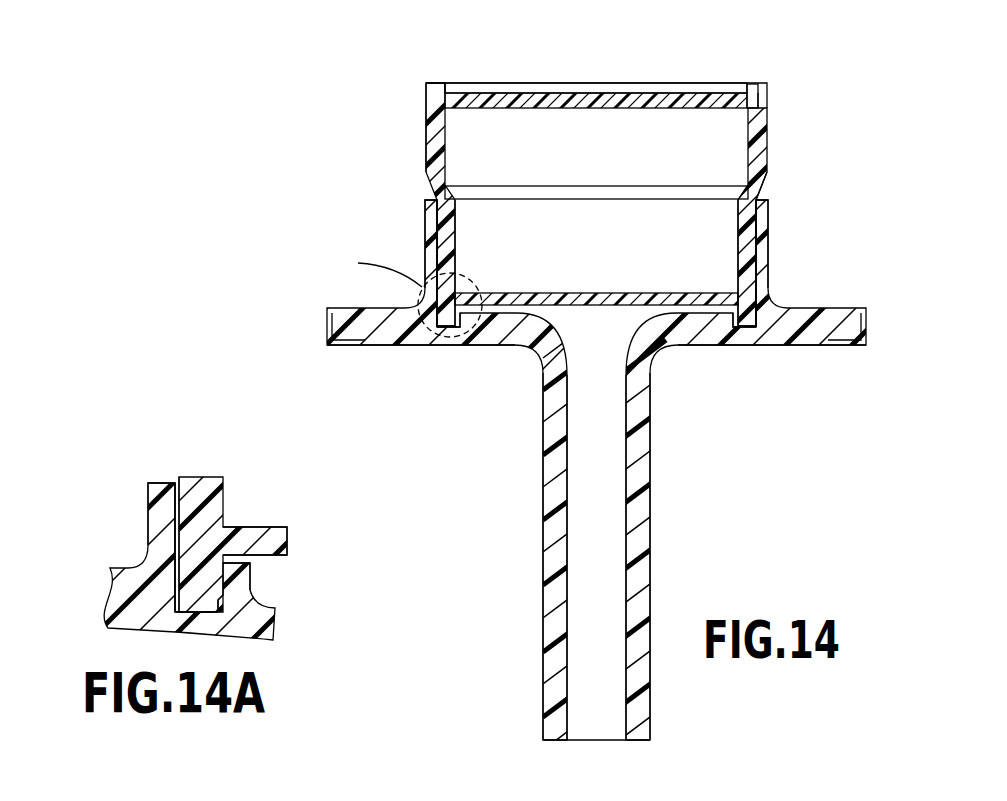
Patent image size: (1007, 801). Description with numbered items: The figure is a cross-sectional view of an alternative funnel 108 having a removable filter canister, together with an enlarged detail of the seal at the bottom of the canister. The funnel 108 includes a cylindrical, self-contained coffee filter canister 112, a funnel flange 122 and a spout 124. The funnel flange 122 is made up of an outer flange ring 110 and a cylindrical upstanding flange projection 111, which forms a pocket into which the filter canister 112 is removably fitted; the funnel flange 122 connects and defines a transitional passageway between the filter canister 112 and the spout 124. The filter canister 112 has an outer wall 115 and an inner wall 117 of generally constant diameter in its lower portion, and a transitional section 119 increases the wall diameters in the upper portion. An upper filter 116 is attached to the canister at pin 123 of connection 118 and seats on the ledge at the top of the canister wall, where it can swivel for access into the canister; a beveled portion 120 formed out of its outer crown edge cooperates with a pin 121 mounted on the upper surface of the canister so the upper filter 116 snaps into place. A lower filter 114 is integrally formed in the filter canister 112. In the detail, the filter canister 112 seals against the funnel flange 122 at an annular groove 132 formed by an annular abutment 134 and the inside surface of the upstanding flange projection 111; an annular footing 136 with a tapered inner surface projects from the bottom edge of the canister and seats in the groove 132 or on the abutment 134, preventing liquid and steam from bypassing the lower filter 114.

In FIG. 14, the funnel 108 is at (376, 211).
In FIG. 14, the outer flange ring 110 is at (823, 300).
In FIG. 14A, the outer flange ring 110 is at (92, 600).
In FIG. 14, the cylindrical upstanding flange projection 111 is at (776, 207).
In FIG. 14A, the cylindrical upstanding flange projection 111 is at (140, 517).
In FIG. 14, the filter canister 112 is at (767, 145).
In FIG. 14, the lower filter 114 is at (710, 286).
In FIG. 14A, the lower filter 114 is at (253, 527).
In FIG. 14, the outer wall 115 is at (718, 318).
In FIG. 14A, the outer wall 115 is at (169, 500).
In FIG. 14, the upper filter 116 is at (705, 78).
In FIG. 14, the inner wall 117 is at (730, 241).
In FIG. 14A, the inner wall 117 is at (232, 495).
In FIG. 14, the connection 118 is at (420, 98).
In FIG. 14, the transitional section 119 is at (774, 183).
In FIG. 14, the beveled portion 120 is at (763, 79).
In FIG. 14, the pin 121 is at (776, 95).
In FIG. 14, the funnel flange 122 is at (822, 350).
In FIG. 14, the pin 123 is at (437, 78).
In FIG. 14, the spout 124 is at (668, 520).
In FIG. 14A, the annular groove 132 is at (118, 628).
In FIG. 14A, the annular abutment 134 is at (258, 575).
In FIG. 14A, the annular footing 136 is at (224, 594).